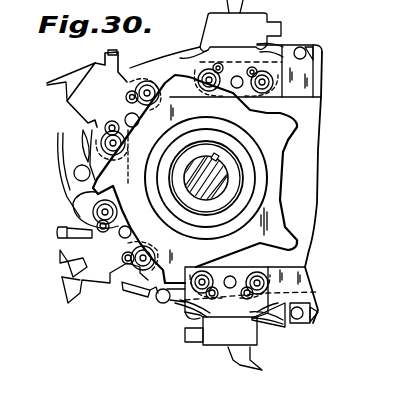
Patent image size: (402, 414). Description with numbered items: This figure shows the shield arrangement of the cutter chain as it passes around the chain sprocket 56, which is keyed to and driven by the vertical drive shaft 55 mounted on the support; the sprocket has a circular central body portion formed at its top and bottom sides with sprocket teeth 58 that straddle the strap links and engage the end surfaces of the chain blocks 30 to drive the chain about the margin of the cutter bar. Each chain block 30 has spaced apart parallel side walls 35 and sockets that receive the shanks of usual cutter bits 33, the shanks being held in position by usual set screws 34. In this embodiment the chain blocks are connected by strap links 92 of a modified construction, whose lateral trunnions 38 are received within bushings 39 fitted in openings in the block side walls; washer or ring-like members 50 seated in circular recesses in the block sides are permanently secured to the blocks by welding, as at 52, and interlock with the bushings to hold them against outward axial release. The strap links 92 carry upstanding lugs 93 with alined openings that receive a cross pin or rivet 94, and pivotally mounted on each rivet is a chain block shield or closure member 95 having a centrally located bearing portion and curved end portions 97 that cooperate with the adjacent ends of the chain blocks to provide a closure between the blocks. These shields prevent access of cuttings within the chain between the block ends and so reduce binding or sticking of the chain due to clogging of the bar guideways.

The chain block 30 is at (222, 337).
The cutter bit 33 is at (262, 370).
The set screw 34 is at (185, 345).
The side wall 35 is at (185, 305).
The lateral trunnion 38 is at (132, 296).
The bushing 39 is at (122, 270).
The ring-like member 50 is at (73, 228).
The weld 52 is at (68, 255).
The vertical drive shaft 55 is at (215, 170).
The chain sprocket 56 is at (273, 183).
The sprocket teeth 58 is at (280, 228).
The strap link 92 is at (310, 278).
The upstanding lug 93 is at (312, 322).
The cross pin or rivet 94 is at (310, 300).
The chain block shield 95 is at (280, 320).
The curved end portion 97 is at (88, 123).